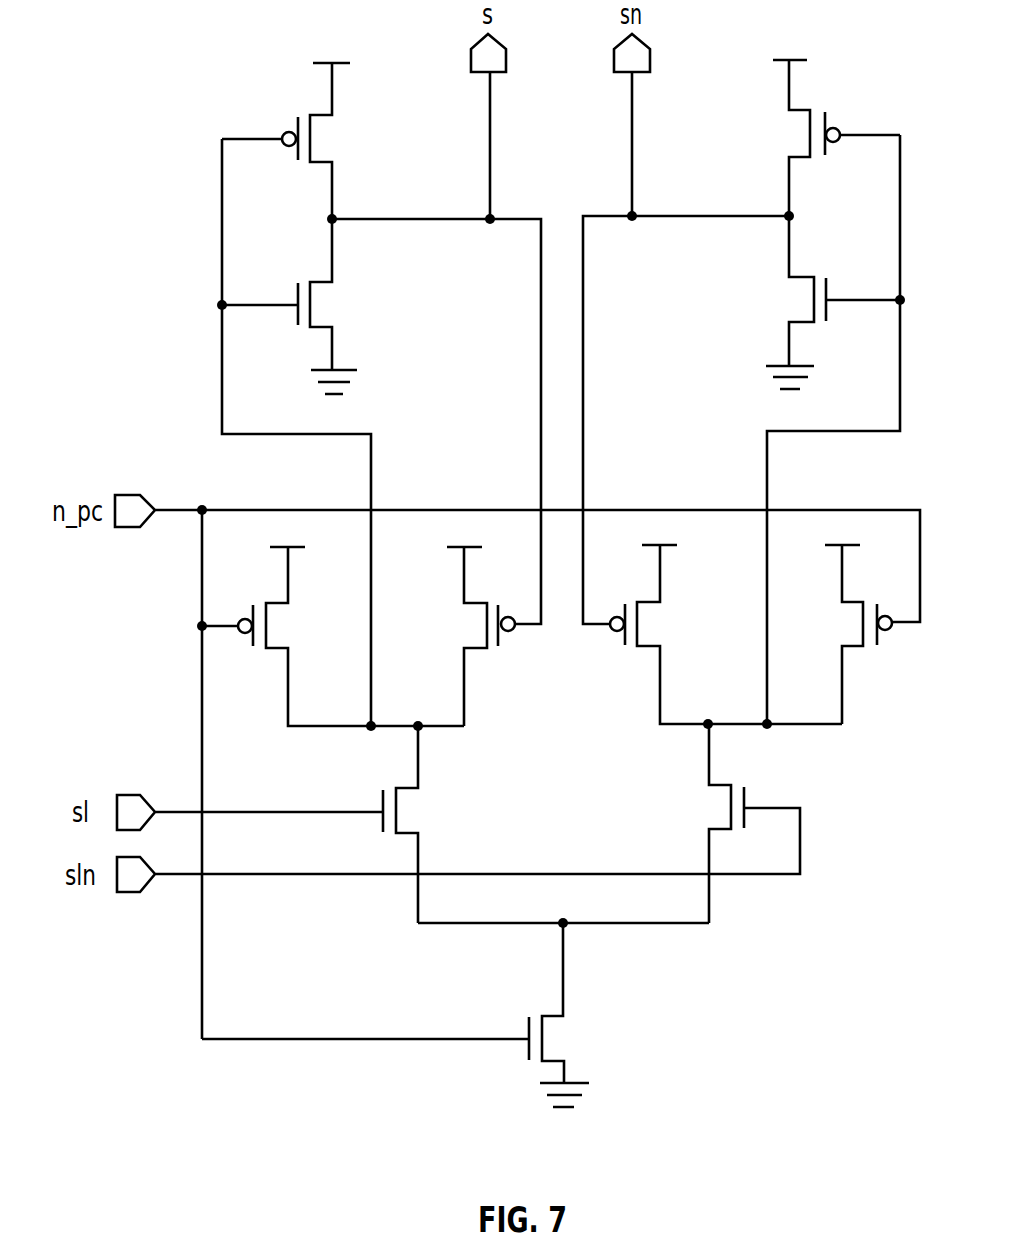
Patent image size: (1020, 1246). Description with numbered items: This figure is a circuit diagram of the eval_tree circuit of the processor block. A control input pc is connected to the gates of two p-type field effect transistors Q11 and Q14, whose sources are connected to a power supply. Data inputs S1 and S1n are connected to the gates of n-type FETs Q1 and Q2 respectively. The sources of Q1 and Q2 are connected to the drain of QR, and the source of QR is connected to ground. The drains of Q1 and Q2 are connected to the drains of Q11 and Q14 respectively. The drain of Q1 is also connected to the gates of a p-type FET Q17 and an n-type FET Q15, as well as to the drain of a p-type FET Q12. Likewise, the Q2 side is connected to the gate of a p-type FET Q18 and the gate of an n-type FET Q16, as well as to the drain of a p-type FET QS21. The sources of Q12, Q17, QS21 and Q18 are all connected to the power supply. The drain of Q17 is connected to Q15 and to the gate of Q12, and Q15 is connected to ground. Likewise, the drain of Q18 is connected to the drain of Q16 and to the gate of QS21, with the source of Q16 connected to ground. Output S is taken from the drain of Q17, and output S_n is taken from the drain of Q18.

The p-type FET Q17 is at (301, 141).
The n-type FET Q15 is at (301, 306).
The p-type FET Q18 is at (820, 138).
The n-type FET Q16 is at (821, 302).
The p-type FET Q11 is at (351, 636).
The p-type FET Q12 is at (470, 636).
The p-type FET QS21 is at (726, 634).
The p-type FET Q14 is at (846, 634).
The n-type FET Q1 is at (415, 824).
The n-type FET Q2 is at (714, 823).
The n-type FET QR is at (402, 1015).